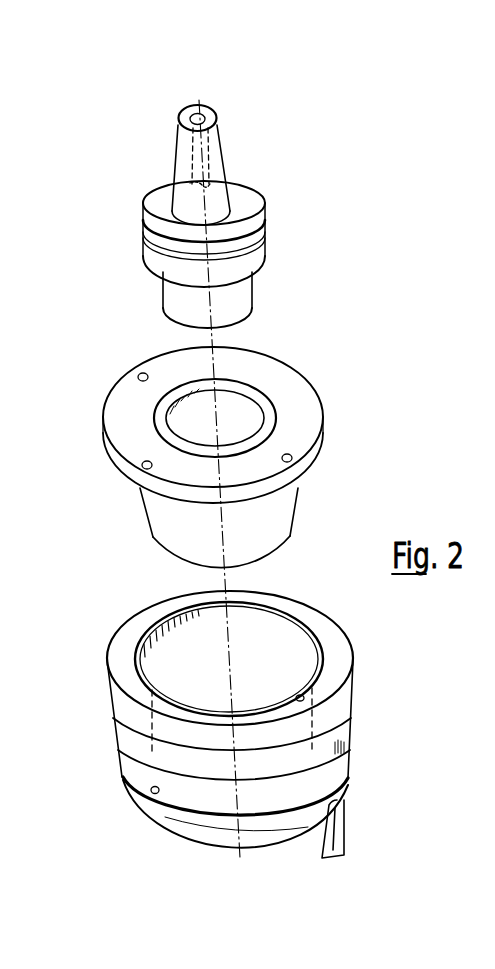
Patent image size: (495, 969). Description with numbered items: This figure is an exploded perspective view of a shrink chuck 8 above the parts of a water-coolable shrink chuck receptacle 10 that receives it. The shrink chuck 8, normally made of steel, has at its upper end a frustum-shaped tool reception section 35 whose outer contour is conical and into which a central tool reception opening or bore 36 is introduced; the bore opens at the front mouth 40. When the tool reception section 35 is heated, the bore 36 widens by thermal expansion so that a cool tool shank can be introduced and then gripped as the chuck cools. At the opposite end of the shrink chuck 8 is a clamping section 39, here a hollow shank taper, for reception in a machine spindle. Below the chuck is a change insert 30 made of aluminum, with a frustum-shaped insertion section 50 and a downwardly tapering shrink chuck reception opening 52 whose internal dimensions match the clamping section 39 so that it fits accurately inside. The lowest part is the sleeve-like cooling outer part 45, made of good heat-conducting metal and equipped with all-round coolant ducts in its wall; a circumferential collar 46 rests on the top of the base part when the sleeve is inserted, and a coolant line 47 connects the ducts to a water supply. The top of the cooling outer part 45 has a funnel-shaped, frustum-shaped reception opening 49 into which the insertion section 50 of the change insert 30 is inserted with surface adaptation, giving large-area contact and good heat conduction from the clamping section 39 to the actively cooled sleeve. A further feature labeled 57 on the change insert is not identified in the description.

The shrink chuck 8 is at (312, 187).
The shrink chuck receptacle 10 is at (388, 710).
The change insert 30 is at (347, 465).
The tool reception section 35 is at (218, 160).
The tool reception opening or bore 36 is at (192, 162).
The clamping section 39 is at (246, 293).
The front mouth 40 is at (196, 111).
The cooling outer part 45 is at (109, 748).
The circumferential collar 46 is at (112, 695).
The coolant line 47 is at (343, 825).
The reception opening 49 is at (276, 642).
The insertion section 50 is at (281, 520).
The shrink chuck reception opening 52 is at (243, 414).
The flange 57 is at (322, 437).